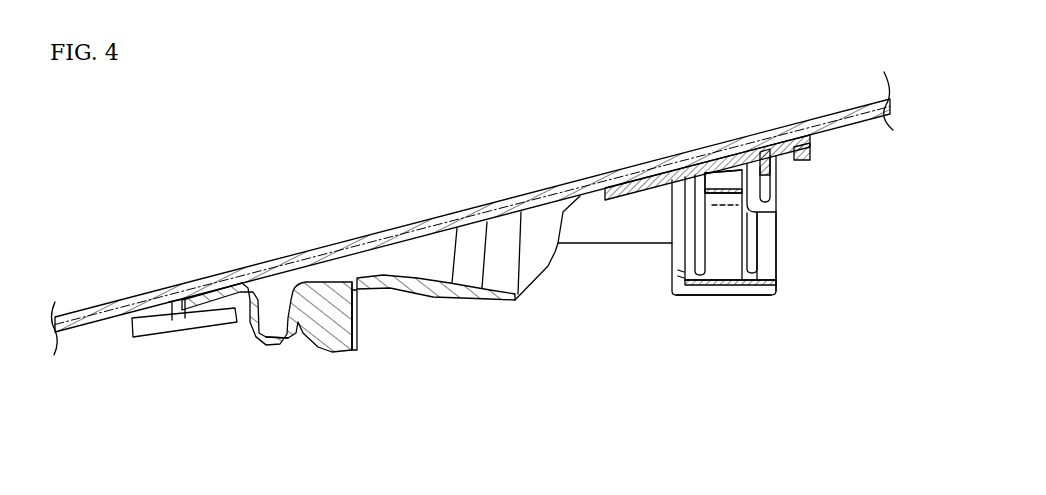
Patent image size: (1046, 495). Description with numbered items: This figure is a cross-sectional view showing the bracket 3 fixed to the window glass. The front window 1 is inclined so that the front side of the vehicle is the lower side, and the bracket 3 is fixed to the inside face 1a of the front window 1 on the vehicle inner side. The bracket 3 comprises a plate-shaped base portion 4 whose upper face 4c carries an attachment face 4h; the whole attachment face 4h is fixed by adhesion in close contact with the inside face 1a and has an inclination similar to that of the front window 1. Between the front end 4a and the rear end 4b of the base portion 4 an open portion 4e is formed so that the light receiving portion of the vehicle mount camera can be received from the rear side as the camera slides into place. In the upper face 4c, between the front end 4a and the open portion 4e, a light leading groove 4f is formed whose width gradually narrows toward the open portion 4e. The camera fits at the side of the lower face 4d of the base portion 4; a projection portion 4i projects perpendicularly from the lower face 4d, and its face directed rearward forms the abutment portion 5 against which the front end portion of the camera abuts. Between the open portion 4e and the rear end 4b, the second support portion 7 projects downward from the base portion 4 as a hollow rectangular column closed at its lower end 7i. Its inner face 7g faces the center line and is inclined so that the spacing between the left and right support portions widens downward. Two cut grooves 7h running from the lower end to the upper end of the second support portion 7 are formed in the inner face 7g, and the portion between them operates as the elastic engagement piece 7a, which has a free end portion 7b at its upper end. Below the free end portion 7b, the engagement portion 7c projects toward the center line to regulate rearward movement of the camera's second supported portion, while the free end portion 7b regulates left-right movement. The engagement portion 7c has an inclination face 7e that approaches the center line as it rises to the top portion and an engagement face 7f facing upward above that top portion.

The front window 1 is at (98, 308).
The inside face 1a is at (68, 342).
The bracket 3 is at (153, 337).
The base portion 4 is at (186, 295).
The front end 4a is at (130, 336).
The rear end 4b is at (811, 150).
The upper face 4c is at (677, 188).
The attachment face 4h is at (765, 162).
The lower face 4d is at (215, 323).
The open portion 4e is at (528, 257).
The light leading groove 4f is at (410, 262).
The projection portion 4i is at (344, 345).
The abutment portion 5 is at (358, 322).
The second support portion 7 is at (724, 296).
The elastic engagement piece 7a is at (760, 258).
The free end portion 7b is at (737, 170).
The engagement portion 7c is at (730, 200).
The inclination face 7e is at (765, 232).
The engagement face 7f is at (722, 173).
The inner face 7g is at (715, 262).
The cut groove 7h is at (755, 250).
The lower end 7i is at (752, 300).